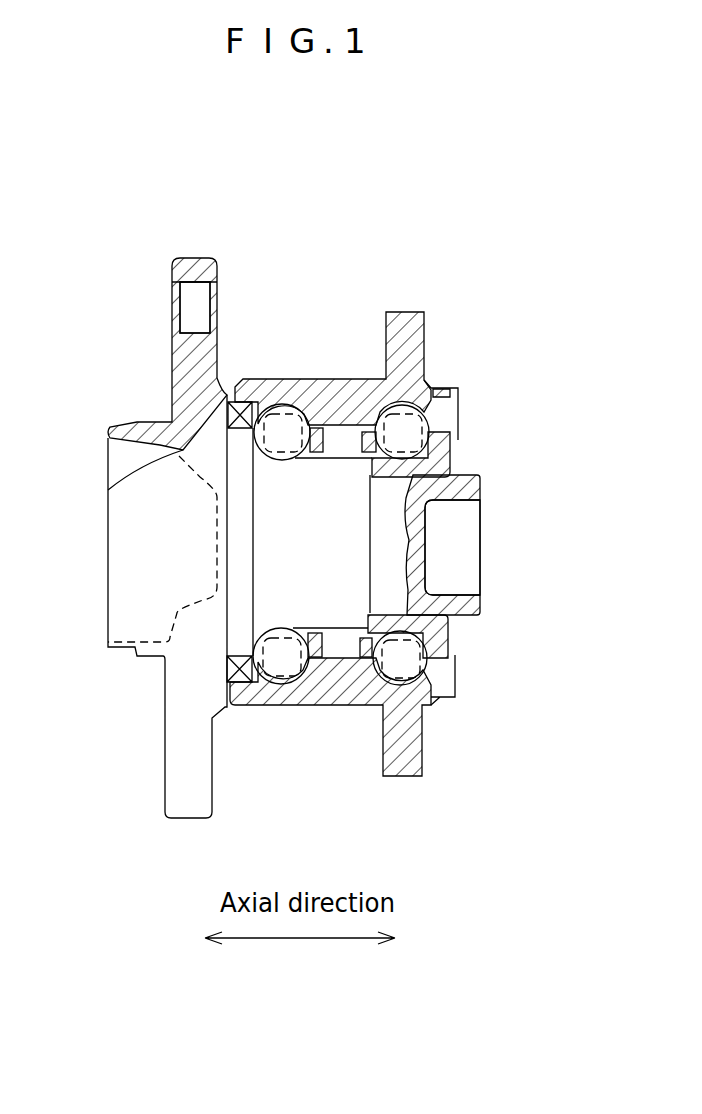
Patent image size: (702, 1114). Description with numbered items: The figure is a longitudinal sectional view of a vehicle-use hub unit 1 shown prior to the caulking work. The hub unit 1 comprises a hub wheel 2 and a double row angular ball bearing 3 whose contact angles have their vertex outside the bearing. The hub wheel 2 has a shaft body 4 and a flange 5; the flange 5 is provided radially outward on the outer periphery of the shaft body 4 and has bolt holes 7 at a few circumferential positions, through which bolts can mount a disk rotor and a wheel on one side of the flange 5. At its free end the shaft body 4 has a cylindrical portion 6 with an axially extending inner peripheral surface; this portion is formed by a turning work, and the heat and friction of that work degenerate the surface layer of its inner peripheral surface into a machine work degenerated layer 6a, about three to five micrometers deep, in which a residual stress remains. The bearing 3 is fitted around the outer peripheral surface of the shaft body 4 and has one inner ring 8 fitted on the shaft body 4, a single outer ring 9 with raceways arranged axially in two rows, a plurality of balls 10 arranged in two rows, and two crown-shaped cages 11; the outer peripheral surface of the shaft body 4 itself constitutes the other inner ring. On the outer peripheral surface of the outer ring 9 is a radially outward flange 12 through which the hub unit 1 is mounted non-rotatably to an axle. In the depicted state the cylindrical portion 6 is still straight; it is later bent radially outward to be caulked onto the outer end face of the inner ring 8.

The hub unit 1 is at (376, 212).
The hub wheel 2 is at (108, 597).
The double row angular ball bearing 3 is at (288, 382).
The shaft body 4 is at (268, 606).
The flange 5 is at (200, 258).
The cylindrical portion 6 is at (455, 476).
The machine work degenerated layer 6a is at (455, 501).
The bolt holes 7 is at (204, 312).
The inner ring 8 is at (450, 455).
The outer ring 9 is at (344, 380).
The balls 10 is at (280, 408).
The crown-shaped cages 11 is at (313, 657).
The radially outward flange 12 is at (405, 312).